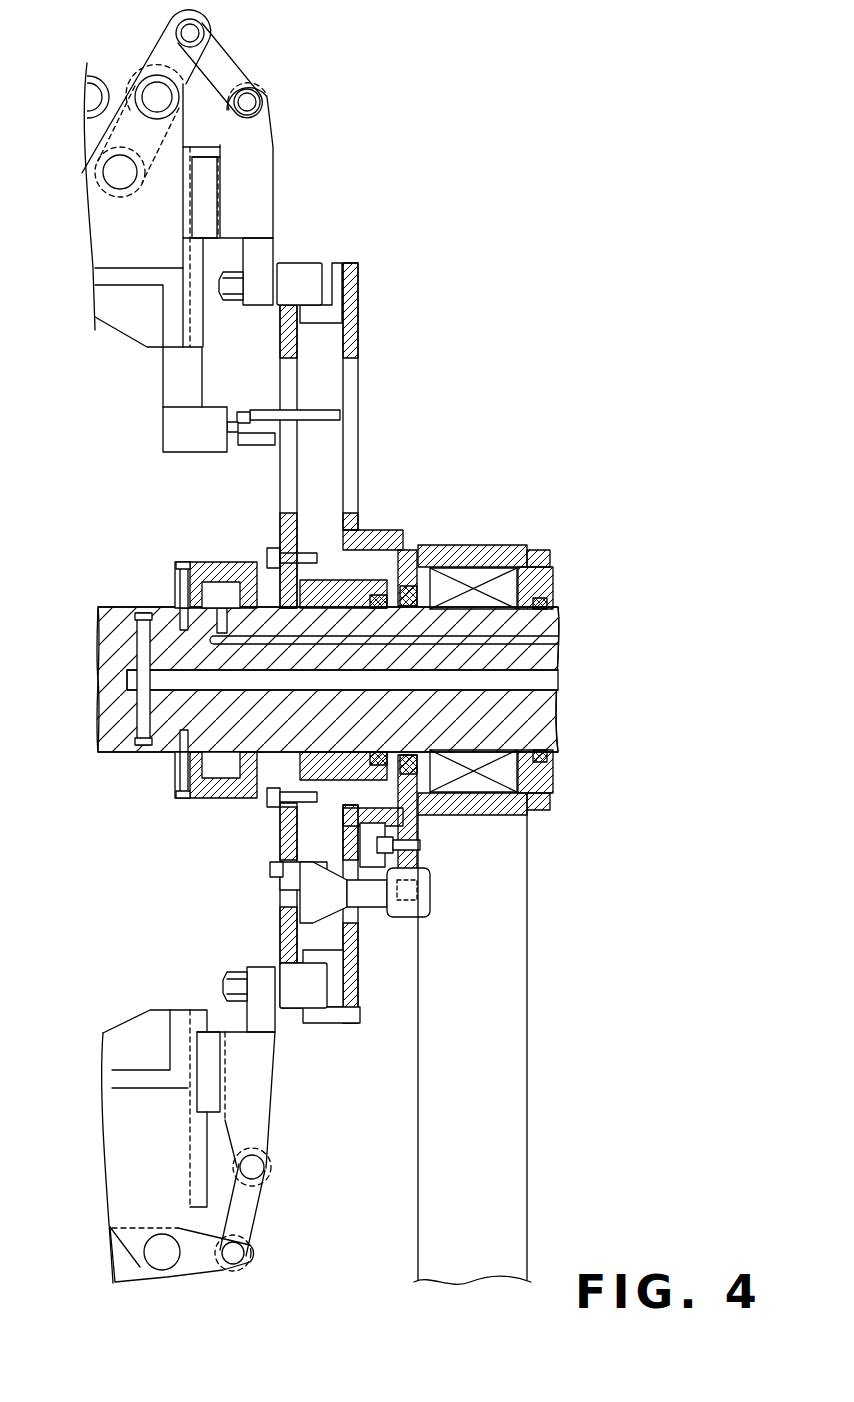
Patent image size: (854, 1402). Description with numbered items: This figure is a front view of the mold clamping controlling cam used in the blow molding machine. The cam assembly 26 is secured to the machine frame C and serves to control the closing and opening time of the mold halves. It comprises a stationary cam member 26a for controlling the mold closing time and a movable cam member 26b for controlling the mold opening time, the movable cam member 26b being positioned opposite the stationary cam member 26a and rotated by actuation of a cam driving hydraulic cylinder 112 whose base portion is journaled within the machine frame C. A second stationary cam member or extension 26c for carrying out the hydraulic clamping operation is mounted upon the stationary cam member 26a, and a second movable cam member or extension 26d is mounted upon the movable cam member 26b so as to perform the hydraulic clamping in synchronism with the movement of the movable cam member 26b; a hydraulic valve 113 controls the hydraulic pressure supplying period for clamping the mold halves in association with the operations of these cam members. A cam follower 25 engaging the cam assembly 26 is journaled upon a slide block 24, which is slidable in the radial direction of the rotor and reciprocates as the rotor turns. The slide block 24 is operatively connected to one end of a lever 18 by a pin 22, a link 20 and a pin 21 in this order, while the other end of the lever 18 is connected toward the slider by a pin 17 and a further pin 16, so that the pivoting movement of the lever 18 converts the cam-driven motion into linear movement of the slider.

The pin 16 is at (120, 178).
The pin 17 is at (158, 108).
The lever 18 is at (158, 58).
The link 20 is at (220, 70).
The pin 21 is at (196, 33).
The pin 22 is at (254, 103).
The slide block 24 is at (258, 170).
The cam follower 25 is at (308, 266).
The cam assembly 26 is at (368, 271).
The stationary cam member 26a is at (350, 328).
The movable cam member 26b is at (287, 341).
The second stationary cam member 26c is at (320, 414).
The second movable cam member 26d is at (258, 447).
The cam driving hydraulic cylinder 112 is at (423, 910).
The hydraulic valve 113 is at (183, 440).
The machine frame C is at (508, 1225).